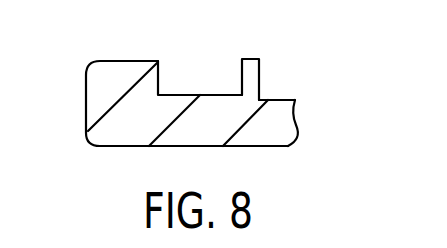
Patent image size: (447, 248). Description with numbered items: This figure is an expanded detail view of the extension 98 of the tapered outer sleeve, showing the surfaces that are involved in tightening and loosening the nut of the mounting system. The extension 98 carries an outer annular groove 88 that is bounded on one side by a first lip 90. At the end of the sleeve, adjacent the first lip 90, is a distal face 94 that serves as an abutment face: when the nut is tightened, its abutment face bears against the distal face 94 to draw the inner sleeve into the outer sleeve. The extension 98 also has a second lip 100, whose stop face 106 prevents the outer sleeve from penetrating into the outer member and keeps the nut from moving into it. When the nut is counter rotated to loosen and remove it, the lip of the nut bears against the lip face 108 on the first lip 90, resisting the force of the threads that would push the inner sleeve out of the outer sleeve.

The distal face 94 is at (86, 103).
The first lip 90 is at (128, 73).
The lip face 108 is at (177, 77).
The outer annular groove 88 is at (212, 93).
The second lip 100 is at (252, 67).
The stop face 106 is at (259, 78).
The extension 98 is at (274, 114).